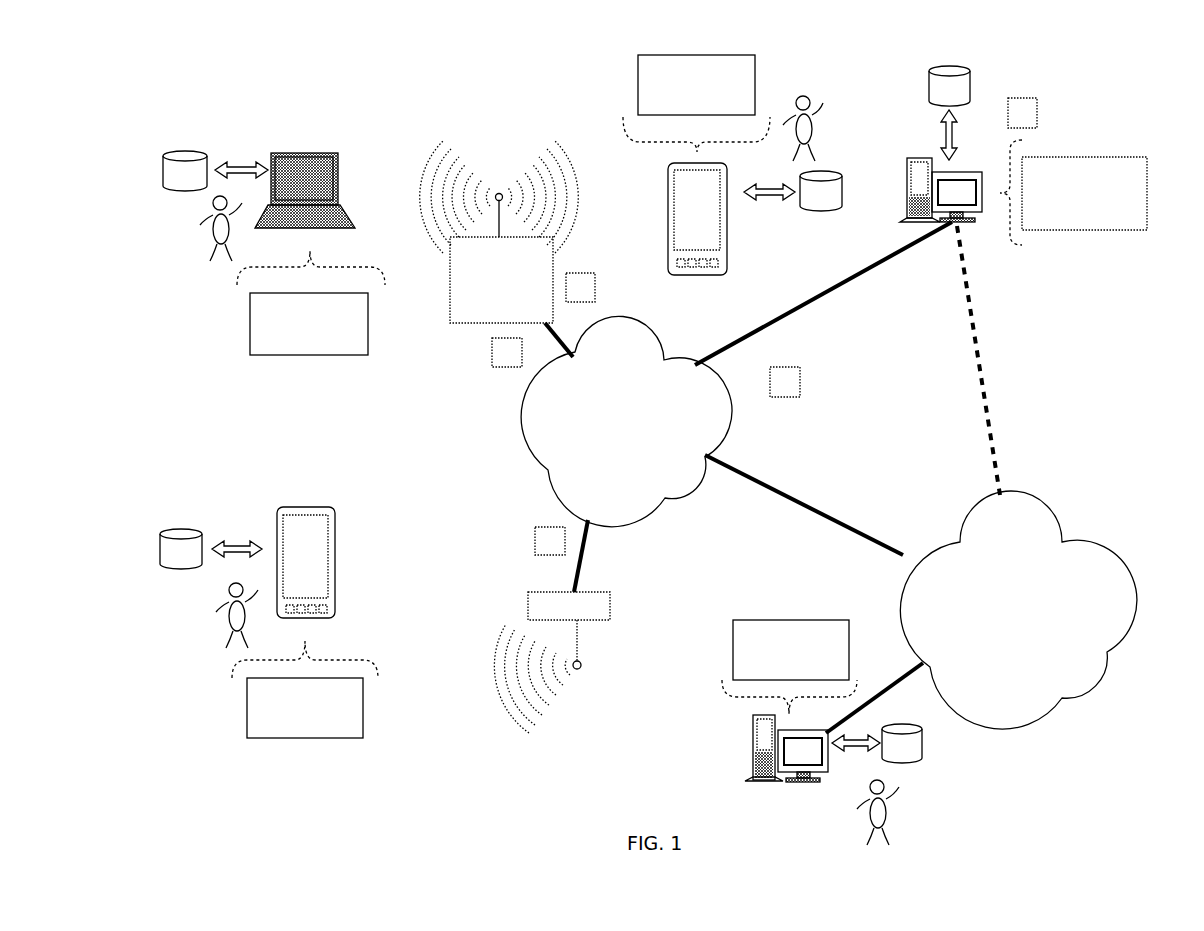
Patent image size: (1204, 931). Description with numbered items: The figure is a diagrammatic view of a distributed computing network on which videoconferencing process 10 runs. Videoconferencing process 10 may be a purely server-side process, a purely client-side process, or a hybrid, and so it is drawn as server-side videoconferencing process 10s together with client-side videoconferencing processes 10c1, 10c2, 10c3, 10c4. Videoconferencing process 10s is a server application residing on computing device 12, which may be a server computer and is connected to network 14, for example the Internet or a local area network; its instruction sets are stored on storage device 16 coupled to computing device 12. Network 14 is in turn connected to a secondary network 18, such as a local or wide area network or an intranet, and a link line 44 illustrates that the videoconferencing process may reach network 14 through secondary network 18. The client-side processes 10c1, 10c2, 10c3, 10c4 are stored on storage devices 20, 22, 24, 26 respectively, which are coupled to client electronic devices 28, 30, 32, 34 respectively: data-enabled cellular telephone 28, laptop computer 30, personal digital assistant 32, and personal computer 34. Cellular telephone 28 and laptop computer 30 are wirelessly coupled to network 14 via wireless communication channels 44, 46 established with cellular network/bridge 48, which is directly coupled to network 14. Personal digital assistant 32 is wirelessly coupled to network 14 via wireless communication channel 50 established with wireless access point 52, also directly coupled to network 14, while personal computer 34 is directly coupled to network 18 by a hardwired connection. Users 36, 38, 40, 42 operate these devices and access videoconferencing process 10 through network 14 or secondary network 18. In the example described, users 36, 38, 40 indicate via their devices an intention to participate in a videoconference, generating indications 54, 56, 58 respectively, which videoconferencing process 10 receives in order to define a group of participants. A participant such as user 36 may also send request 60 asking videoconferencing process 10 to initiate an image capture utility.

The videoconferencing process 10 is at (1061, 79).
The server-side videoconferencing process 10s is at (1147, 185).
The client-side videoconferencing process 10c1 is at (755, 95).
The client-side videoconferencing process 10c2 is at (368, 308).
The client-side videoconferencing process 10c3 is at (363, 692).
The client-side videoconferencing process 10c4 is at (849, 657).
The computing device 12 is at (906, 172).
The network 14 is at (626, 421).
The storage device 16 is at (949, 113).
The secondary network 18 is at (1018, 610).
The storage device 20 is at (793, 191).
The storage device 22 is at (215, 171).
The storage device 24 is at (211, 549).
The storage device 26 is at (877, 743).
The data-enabled cellular telephone 28 is at (727, 180).
The laptop computer 30 is at (340, 162).
The personal digital assistant 32 is at (335, 572).
The personal computer 34 is at (750, 745).
The user 36 is at (818, 110).
The user 38 is at (190, 222).
The user 40 is at (213, 598).
The user 42 is at (907, 803).
The link line / wireless communication channel 44 is at (978, 390).
The wireless communication channel 46 is at (406, 155).
The cellular network/bridge 48 is at (450, 258).
The wireless communication channel 50 is at (435, 592).
The wireless access point 52 is at (610, 605).
The indication 54 is at (595, 287).
The indication 56 is at (491, 352).
The indication 58 is at (533, 540).
The request 60 is at (1037, 113).